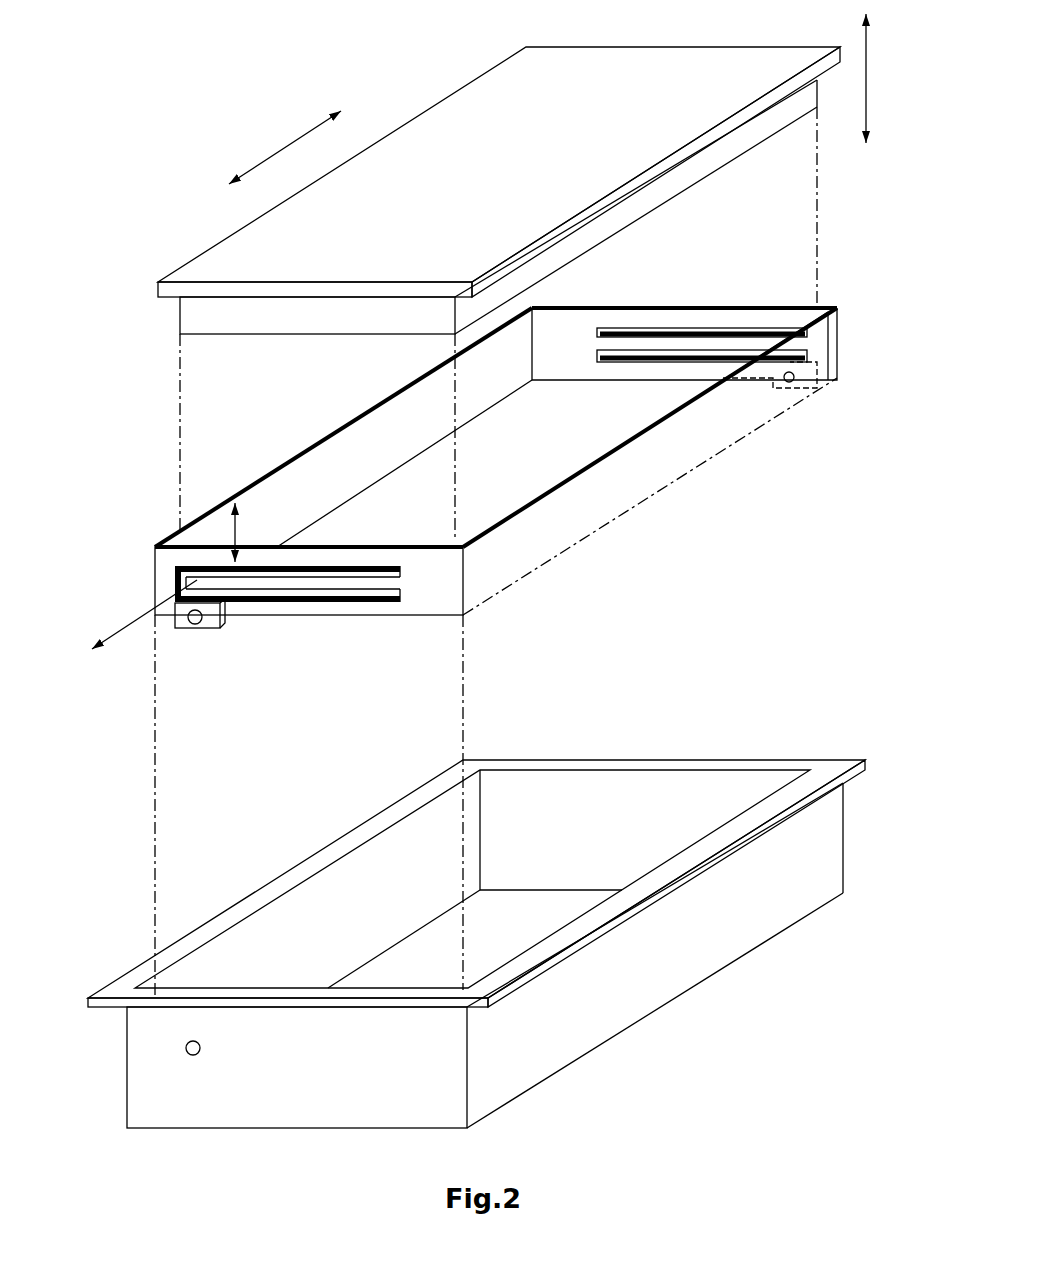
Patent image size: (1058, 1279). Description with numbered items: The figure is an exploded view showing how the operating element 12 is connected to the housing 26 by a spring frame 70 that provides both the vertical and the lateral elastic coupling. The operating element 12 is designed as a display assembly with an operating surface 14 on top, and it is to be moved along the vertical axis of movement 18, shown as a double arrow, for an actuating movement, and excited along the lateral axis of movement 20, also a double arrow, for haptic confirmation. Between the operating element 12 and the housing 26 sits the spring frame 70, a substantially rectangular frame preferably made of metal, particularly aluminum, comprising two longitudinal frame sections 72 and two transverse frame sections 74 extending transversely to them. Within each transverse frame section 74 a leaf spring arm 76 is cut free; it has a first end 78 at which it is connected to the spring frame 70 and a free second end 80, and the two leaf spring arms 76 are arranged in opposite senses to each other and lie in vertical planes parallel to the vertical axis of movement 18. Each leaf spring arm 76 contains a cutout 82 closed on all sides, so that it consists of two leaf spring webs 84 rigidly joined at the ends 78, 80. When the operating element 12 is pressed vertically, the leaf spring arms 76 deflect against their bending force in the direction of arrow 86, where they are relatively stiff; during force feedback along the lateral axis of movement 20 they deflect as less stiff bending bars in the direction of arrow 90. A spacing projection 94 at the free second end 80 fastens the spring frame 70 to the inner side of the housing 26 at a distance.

The operating element 12 is at (430, 59).
The operating surface 14 is at (477, 162).
The vertical axis of movement 18 is at (863, 53).
The lateral axis of movement 20 is at (273, 155).
The housing 26 is at (803, 873).
The spring frame 70 is at (247, 456).
The longitudinal frame sections 72 is at (357, 447).
The transverse frame sections 74 is at (558, 340).
The leaf spring arms 76 is at (748, 271).
The first end 78 is at (456, 524).
The free second end 80 is at (830, 286).
The cutout 82 is at (645, 357).
The leaf spring webs 84 is at (678, 338).
The arrow 86 is at (227, 533).
The arrow 90 is at (132, 620).
The spacing projection 94 is at (210, 628).